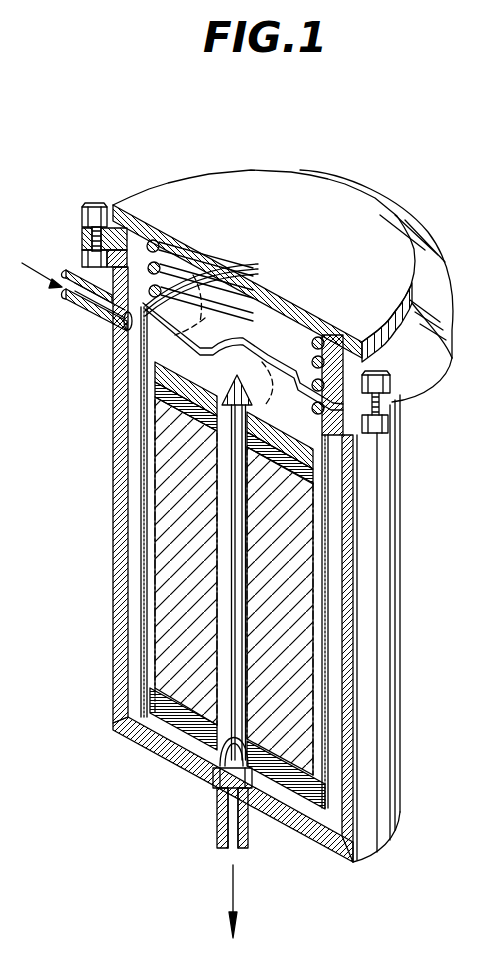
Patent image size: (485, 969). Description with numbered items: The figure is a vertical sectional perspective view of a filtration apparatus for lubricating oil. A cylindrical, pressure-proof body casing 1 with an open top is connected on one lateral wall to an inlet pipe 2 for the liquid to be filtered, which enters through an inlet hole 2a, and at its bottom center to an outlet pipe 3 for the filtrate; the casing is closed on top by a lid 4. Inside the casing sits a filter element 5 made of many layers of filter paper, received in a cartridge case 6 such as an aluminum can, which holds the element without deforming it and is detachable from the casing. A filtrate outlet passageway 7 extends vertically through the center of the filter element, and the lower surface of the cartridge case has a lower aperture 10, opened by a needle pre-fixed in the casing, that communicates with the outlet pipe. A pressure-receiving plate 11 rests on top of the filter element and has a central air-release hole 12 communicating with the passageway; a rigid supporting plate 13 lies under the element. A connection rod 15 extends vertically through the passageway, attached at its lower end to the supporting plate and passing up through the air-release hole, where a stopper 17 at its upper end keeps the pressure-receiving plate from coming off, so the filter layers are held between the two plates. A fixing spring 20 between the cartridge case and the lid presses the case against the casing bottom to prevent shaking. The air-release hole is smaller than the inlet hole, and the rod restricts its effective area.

The body casing 1 is at (120, 555).
The inlet pipe 2 is at (77, 315).
The inlet hole 2a is at (100, 327).
The outlet pipe 3 is at (218, 824).
The lid 4 is at (300, 205).
The filter element 5 is at (172, 602).
The cartridge case 6 is at (143, 492).
The filtrate outlet passageway 7 is at (240, 360).
The lower aperture 10 is at (214, 782).
The pressure-receiving plate 11 is at (308, 442).
The air-release hole 12 is at (228, 410).
The supporting plate 13 is at (145, 733).
The connection rod 15 is at (237, 702).
The stopper 17 is at (230, 345).
The fixing spring 20 is at (177, 275).